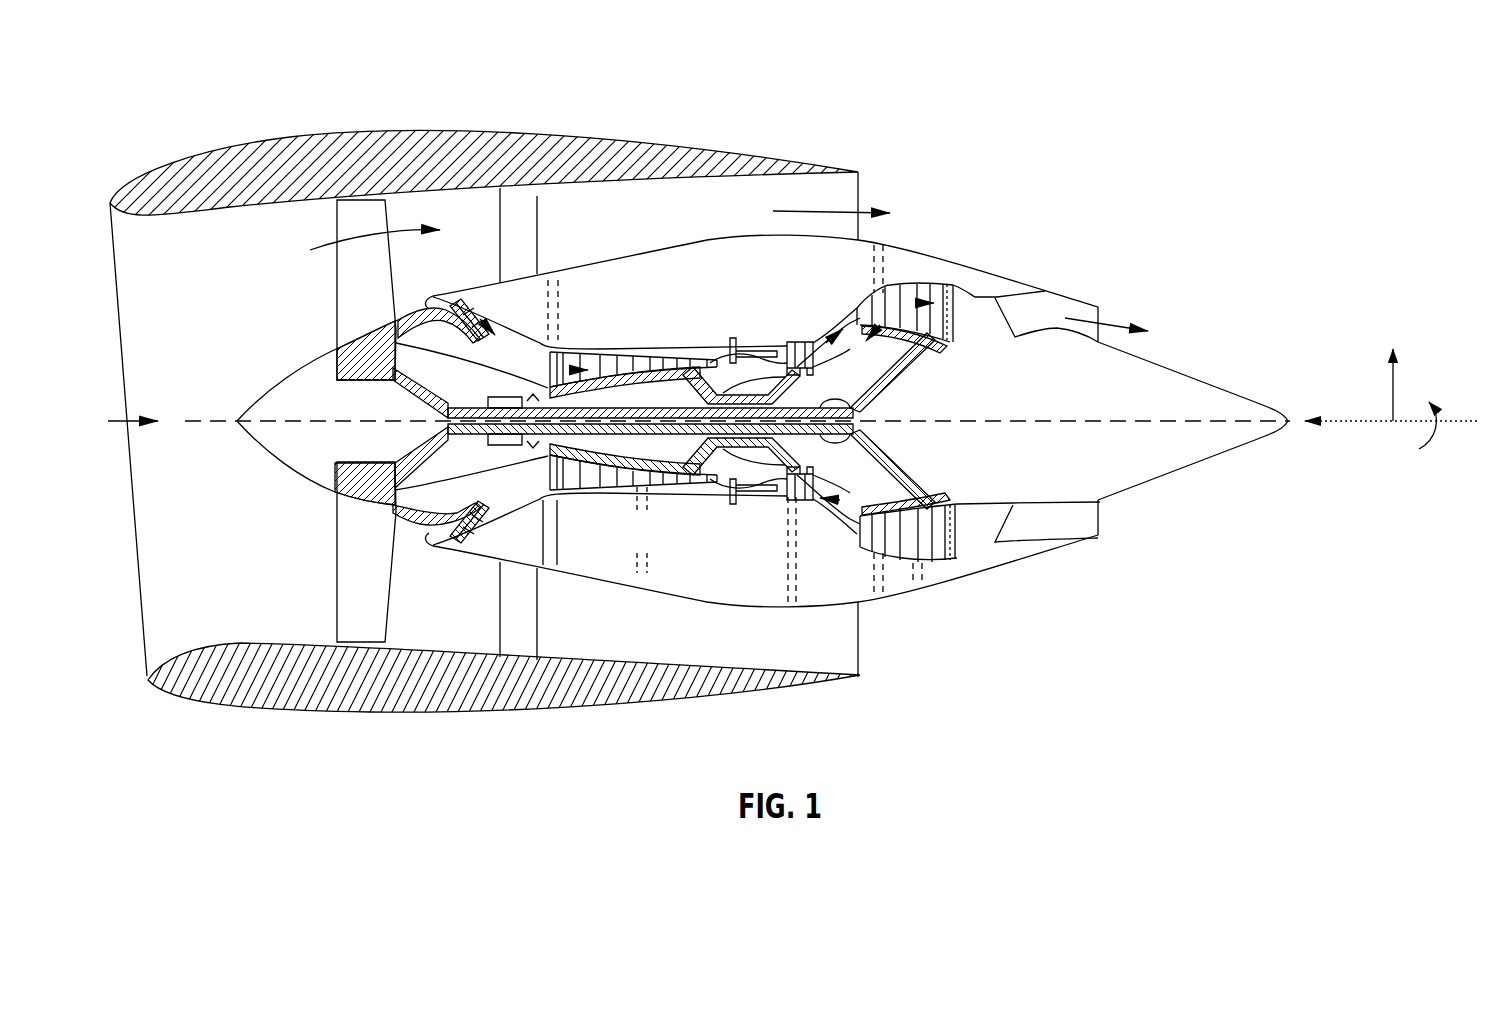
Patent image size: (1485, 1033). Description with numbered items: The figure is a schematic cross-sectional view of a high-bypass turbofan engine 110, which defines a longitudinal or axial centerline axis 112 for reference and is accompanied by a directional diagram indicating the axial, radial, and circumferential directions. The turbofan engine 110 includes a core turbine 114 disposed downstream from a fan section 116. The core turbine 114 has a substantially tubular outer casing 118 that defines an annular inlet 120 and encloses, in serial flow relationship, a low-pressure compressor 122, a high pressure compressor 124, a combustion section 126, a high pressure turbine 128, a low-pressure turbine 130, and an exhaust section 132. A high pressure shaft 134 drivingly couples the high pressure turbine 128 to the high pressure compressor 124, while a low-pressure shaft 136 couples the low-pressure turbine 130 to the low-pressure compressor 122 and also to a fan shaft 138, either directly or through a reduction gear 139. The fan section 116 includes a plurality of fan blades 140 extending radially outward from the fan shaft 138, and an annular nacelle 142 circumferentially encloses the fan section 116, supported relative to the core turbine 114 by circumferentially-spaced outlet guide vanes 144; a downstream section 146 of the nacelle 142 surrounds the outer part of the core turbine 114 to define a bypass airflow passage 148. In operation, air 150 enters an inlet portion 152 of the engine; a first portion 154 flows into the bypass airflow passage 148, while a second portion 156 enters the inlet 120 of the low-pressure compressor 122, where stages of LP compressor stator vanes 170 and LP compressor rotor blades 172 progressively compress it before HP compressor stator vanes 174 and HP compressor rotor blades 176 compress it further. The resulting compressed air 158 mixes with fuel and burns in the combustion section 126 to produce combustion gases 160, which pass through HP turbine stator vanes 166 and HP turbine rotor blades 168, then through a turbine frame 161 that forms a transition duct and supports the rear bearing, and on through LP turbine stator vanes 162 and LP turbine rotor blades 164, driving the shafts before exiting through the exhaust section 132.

The turbofan engine 110 is at (1011, 136).
The axial centerline axis 112 is at (1046, 421).
The core turbine 114 is at (680, 302).
The fan section 116 is at (368, 110).
The outer casing 118 is at (697, 593).
The annular inlet 120 is at (436, 537).
The low-pressure compressor 122 is at (491, 515).
The high pressure compressor 124 is at (569, 500).
The combustion section 126 is at (752, 500).
The high pressure turbine 128 is at (884, 458).
The low-pressure turbine 130 is at (948, 562).
The exhaust section 132 is at (1110, 313).
The high pressure shaft 134 is at (879, 368).
The low-pressure shaft 136 is at (507, 400).
The fan shaft 138 is at (390, 384).
The reduction gear 139 is at (492, 482).
The fan blades 140 is at (336, 598).
The nacelle 142 is at (384, 712).
The outlet guide vanes 144 is at (538, 211).
The downstream section 146 is at (767, 141).
The bypass airflow passage 148 is at (700, 231).
The air 150 is at (140, 415).
The inlet portion 152 is at (136, 643).
The first portion of the air 154 is at (352, 240).
The second portion of the air 156 is at (422, 310).
The compressed air 158 is at (736, 380).
The combustion gases 160 is at (910, 283).
The turbine frame 161 is at (900, 353).
The LP turbine stator vanes 162 is at (882, 300).
The LP turbine rotor blades 164 is at (868, 260).
The HP turbine stator vanes 166 is at (785, 505).
The HP turbine rotor blades 168 is at (767, 456).
The LP compressor stator vanes 170 is at (450, 548).
The LP compressor rotor blades 172 is at (473, 540).
The HP compressor stator vanes 174 is at (660, 480).
The HP compressor rotor blades 176 is at (678, 497).